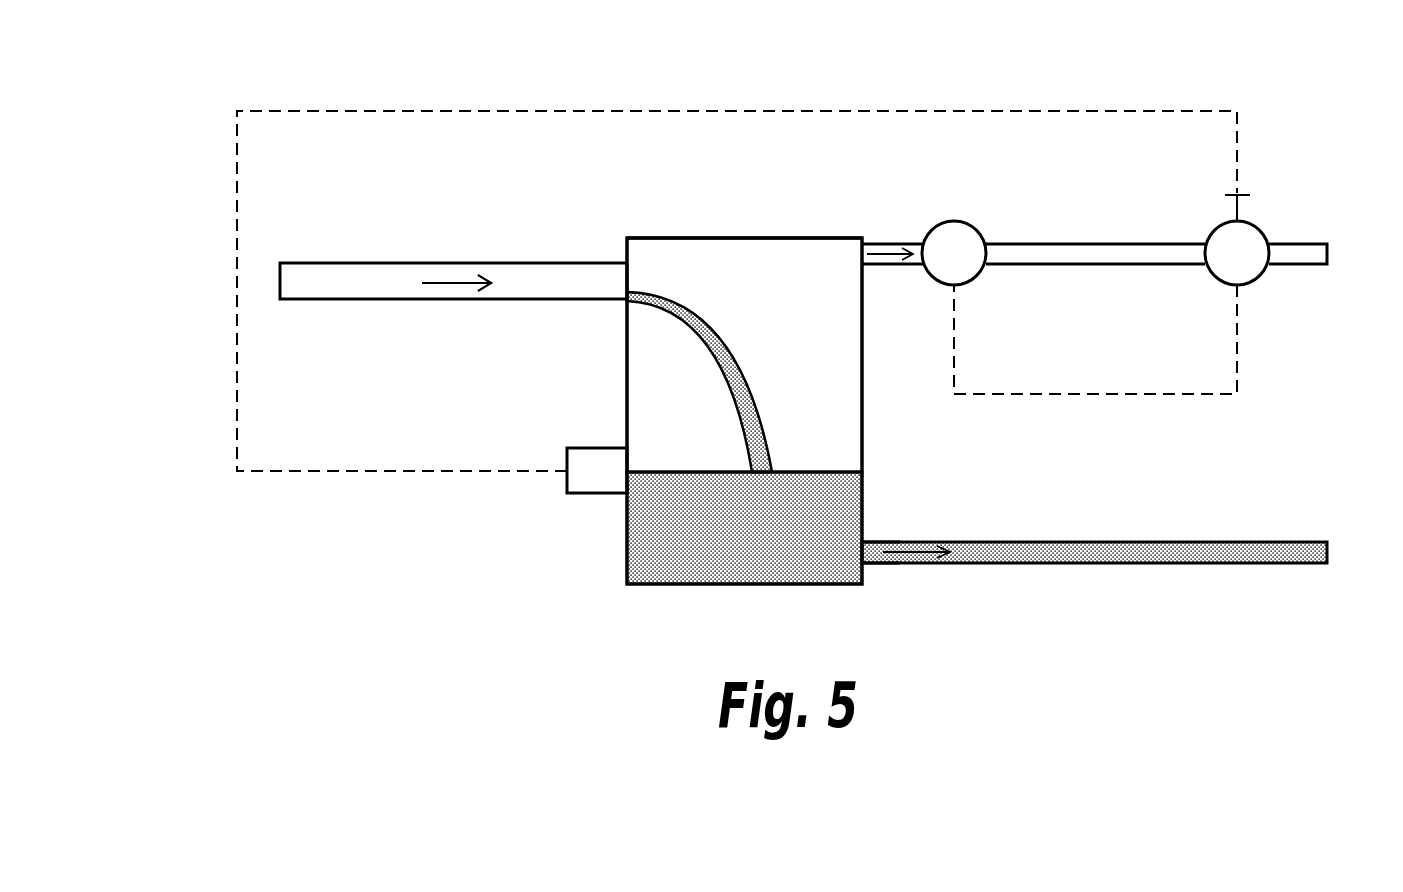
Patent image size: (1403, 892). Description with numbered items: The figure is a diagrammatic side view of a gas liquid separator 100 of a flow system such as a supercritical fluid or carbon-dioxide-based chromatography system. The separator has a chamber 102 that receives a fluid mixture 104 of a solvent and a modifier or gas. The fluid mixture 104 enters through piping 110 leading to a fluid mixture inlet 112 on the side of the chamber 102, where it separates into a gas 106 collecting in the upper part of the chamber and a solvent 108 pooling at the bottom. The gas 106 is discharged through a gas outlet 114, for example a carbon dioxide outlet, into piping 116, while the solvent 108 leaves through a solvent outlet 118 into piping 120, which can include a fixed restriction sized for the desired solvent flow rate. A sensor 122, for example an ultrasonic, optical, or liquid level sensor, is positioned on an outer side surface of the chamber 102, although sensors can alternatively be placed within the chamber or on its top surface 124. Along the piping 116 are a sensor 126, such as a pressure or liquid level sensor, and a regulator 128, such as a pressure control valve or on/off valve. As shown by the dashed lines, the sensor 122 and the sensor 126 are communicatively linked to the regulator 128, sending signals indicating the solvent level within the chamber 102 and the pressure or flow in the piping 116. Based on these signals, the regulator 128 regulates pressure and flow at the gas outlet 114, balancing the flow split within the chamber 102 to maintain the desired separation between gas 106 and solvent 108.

The gas liquid separator 100 is at (846, 74).
The chamber 102 is at (862, 372).
The fluid mixture 104 is at (336, 280).
The gas 106 is at (686, 262).
The solvent 108 is at (815, 478).
The piping 110 is at (488, 263).
The fluid mixture inlet 112 is at (627, 273).
The gas outlet 114 is at (878, 244).
The piping 116 is at (1075, 244).
The solvent outlet 118 is at (863, 542).
The piping 120 is at (1023, 542).
The sensor 122 is at (598, 448).
The top surface 124 is at (772, 238).
The sensor 126 is at (957, 228).
The regulator 128 is at (1247, 230).